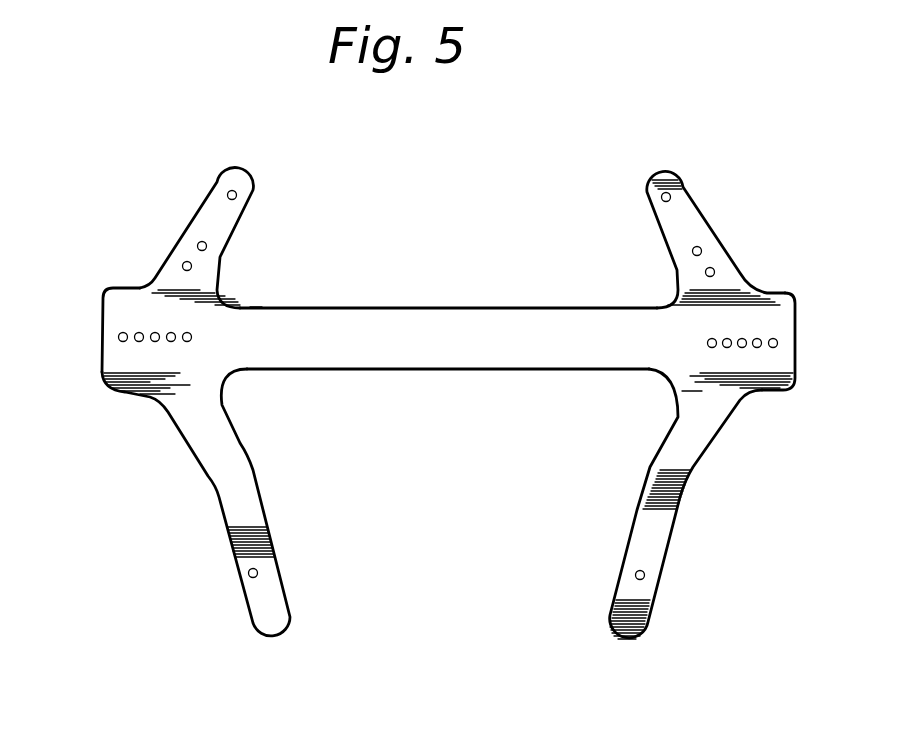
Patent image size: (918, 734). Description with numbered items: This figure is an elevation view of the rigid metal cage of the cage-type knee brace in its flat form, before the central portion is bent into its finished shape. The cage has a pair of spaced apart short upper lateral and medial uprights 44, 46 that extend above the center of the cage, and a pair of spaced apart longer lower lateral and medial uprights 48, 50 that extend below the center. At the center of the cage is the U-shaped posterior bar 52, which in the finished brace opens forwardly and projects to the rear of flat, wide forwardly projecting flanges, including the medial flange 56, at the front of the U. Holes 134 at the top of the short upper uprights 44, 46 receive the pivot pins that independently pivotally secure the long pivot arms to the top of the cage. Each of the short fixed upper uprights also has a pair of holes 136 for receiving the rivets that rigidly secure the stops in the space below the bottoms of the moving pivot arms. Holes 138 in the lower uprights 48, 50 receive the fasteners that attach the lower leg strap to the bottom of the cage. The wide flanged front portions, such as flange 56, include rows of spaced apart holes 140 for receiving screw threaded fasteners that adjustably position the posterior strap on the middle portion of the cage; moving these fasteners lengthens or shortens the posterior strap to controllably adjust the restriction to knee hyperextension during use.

The upper lateral upright 44 is at (227, 223).
The upper medial upright 46 is at (670, 230).
The lower lateral upright 48 is at (243, 507).
The lower medial upright 50 is at (663, 537).
The U-shaped posterior bar 52 is at (445, 357).
The medial flange 56 is at (778, 322).
The holes 134 is at (240, 191).
The holes 136 is at (183, 262).
The holes 138 is at (258, 573).
The holes 140 is at (123, 341).